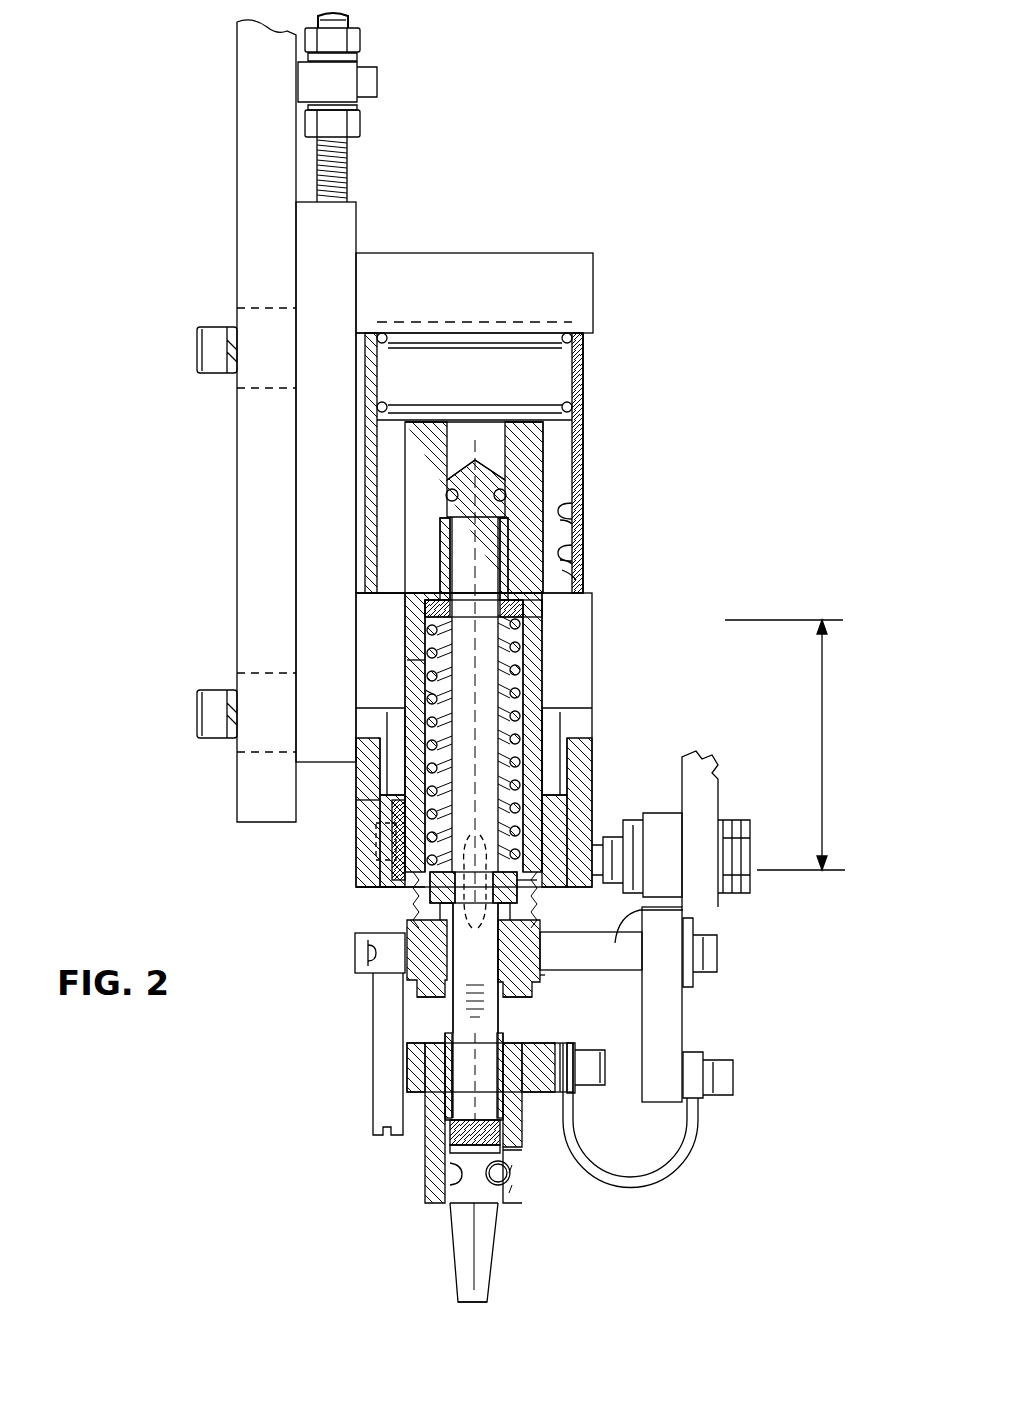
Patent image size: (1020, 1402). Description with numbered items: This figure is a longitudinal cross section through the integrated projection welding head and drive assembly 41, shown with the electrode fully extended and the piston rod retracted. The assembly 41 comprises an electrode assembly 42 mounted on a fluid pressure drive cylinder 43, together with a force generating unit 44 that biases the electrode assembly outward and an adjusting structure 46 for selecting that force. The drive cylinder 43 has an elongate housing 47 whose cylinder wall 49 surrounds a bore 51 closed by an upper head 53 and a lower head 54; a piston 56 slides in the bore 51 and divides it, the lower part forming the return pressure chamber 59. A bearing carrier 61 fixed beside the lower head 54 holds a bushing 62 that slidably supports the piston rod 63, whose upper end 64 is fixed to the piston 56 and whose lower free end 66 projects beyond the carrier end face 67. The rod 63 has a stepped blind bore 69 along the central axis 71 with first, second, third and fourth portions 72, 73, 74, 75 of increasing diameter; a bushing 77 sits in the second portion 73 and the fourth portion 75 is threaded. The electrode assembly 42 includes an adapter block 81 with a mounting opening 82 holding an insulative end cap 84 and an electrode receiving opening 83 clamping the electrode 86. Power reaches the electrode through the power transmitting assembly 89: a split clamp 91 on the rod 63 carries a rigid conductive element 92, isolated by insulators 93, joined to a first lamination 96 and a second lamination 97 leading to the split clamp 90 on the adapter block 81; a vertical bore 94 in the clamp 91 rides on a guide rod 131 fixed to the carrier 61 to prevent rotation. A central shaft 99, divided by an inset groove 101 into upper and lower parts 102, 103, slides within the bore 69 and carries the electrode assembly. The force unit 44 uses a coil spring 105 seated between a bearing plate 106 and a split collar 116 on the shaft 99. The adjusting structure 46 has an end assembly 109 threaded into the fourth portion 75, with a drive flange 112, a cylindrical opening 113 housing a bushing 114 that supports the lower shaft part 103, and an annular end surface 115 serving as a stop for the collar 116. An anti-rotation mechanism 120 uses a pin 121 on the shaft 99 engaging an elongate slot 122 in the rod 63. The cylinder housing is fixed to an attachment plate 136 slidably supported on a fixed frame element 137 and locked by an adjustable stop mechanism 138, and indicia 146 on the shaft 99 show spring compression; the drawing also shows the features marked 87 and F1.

The integrated projection welding head and drive assembly 41 is at (760, 414).
The electrode assembly 42 is at (619, 1218).
The fluid pressure drive cylinder 43 is at (489, 449).
The force generating unit 44 is at (431, 694).
The adjusting structure 46 is at (514, 1000).
The elongate housing 47 is at (602, 410).
The elongate cylinder wall 49 is at (583, 439).
The bore 51 is at (576, 545).
The upper head 53 is at (472, 270).
The lower head 54 is at (356, 622).
The piston 56 is at (578, 379).
The return pressure chamber 59 is at (710, 577).
The bearing housing or carrier 61 is at (365, 798).
The bearing or cylindrical bushing 62 is at (590, 830).
The piston rod 63 is at (423, 611).
The upper end of piston rod 64 is at (448, 436).
The lower free end of rod 66 is at (542, 978).
The lower end face of bearing carrier 67 is at (634, 891).
The blind bore 69 is at (405, 516).
The longitudinal central axis 71 is at (487, 444).
The first bore portion 72 is at (506, 500).
The second bore portion 73 is at (372, 588).
The third bore portion 74 is at (420, 669).
The fourth bore portion 75 is at (440, 903).
The cylindrical bearing or bushing 77 is at (490, 561).
The adapter block 81 is at (430, 1180).
The mounting opening 82 is at (508, 1160).
The electrode receiving opening 83 is at (453, 1204).
The insulative end cap 84 is at (493, 1024).
The electrode 86 is at (482, 1214).
The discharge orifice 87 is at (476, 1318).
The electrical power transmitting assembly 89 is at (698, 1047).
The split clamp 90 is at (412, 1058).
The split clamp 91 is at (690, 916).
The rigid conductive element 92 is at (670, 1070).
The insulators 93 is at (696, 976).
The vertical bore 94 is at (370, 960).
The first flexible electrically conductive cable or lamination 96 is at (708, 788).
The second flexible electrically conducting cable or lamination 97 is at (695, 1161).
The central shaft 99 is at (518, 690).
The inset groove 101 is at (356, 880).
The upper shaft part 102 is at (546, 558).
The lower shaft part 103 is at (450, 1028).
The spring 105 is at (520, 638).
The annular bearing plate or washer 106 is at (569, 634).
The stop or end assembly 109 is at (411, 1010).
The drive flange 112 is at (412, 998).
The cylindrical opening 113 is at (591, 951).
The cylindrical bushing 114 is at (355, 944).
The annular end surface 115 is at (520, 886).
The split collar 116 is at (562, 853).
The anti-rotation mechanism 120 is at (395, 830).
The pin 121 is at (475, 1010).
The elongate slot 122 is at (482, 836).
The guide rod 131 is at (380, 1098).
The attachment plate 136 is at (348, 210).
The fixed frame element 137 is at (237, 143).
The adjustable stop mechanism 138 is at (375, 60).
The indicia 146 is at (500, 1044).
The dimension F1 is at (788, 745).